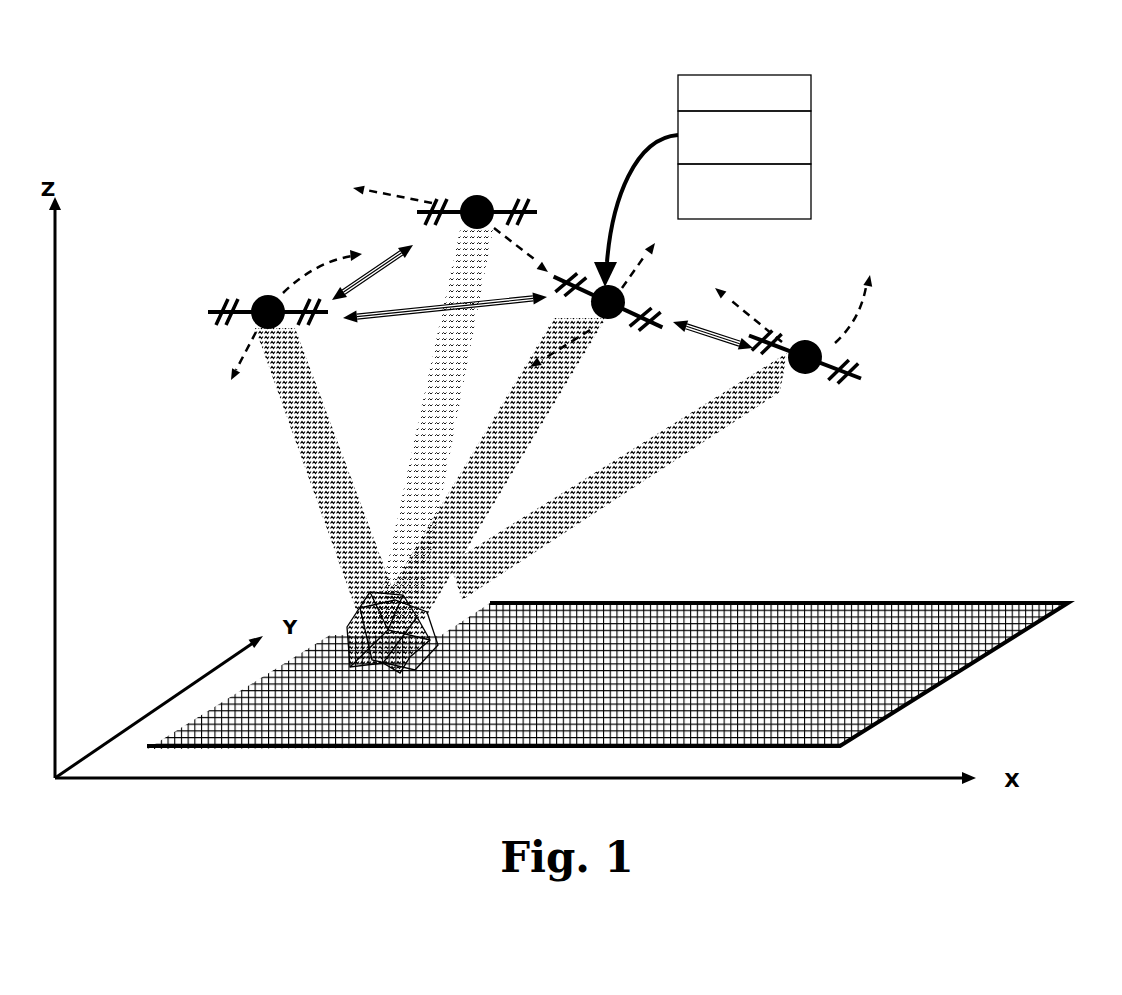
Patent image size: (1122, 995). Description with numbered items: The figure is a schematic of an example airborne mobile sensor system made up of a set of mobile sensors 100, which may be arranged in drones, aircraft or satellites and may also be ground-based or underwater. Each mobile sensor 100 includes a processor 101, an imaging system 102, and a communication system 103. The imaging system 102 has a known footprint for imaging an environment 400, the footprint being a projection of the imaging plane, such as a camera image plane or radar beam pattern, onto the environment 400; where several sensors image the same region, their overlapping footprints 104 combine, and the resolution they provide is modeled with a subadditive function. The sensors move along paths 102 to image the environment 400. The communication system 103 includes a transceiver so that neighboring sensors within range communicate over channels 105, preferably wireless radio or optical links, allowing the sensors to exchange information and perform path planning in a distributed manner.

The mobile sensor 100 is at (272, 295).
The processor 101 is at (812, 102).
The imaging system 102 is at (812, 140).
The communication system 103 is at (812, 192).
The overlapping footprints 104 is at (362, 625).
The channels 105 is at (713, 342).
The environment 400 is at (870, 602).